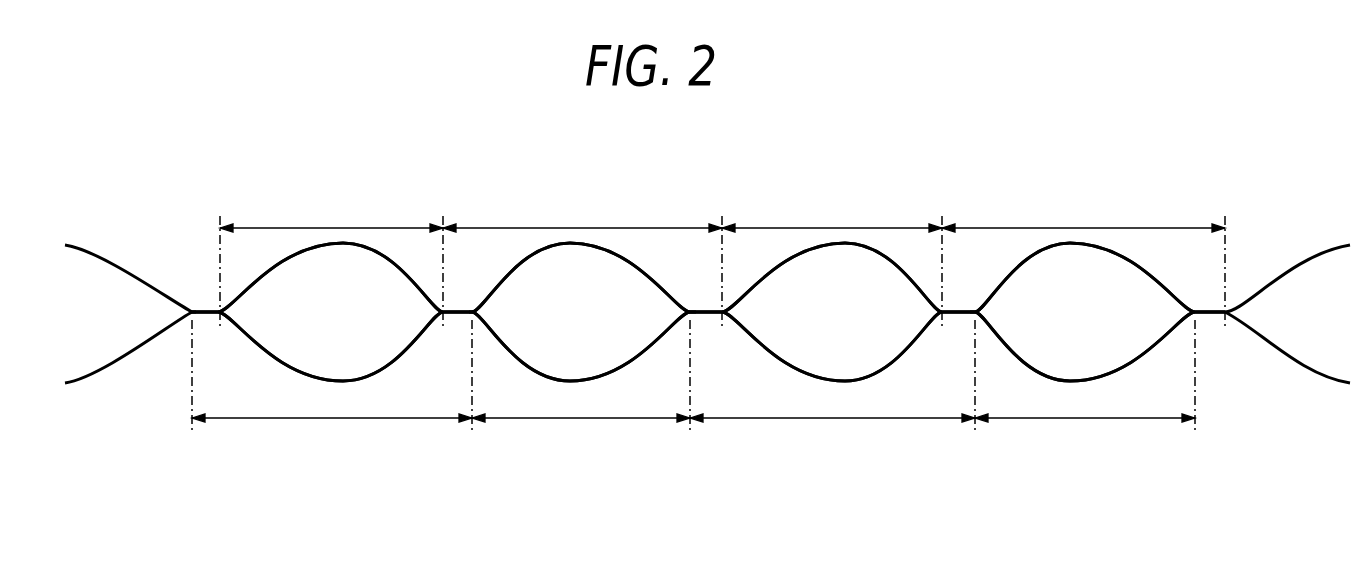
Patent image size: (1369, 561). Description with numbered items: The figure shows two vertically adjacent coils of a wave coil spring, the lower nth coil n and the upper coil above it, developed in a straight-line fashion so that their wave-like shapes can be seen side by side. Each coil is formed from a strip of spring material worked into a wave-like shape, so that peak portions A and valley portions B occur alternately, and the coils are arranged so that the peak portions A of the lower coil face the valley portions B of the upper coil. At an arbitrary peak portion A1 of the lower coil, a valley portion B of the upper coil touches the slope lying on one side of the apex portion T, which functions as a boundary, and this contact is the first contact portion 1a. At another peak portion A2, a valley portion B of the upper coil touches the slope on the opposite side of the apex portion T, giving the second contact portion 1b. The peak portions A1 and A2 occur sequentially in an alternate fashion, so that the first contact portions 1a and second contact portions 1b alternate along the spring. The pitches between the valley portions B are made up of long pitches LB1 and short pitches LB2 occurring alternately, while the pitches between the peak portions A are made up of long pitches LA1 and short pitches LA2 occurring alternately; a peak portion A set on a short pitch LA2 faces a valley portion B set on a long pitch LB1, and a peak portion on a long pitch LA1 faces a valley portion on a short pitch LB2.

The nth coil n is at (90, 380).
The apex portion T is at (192, 312).
The first contact portion 1a is at (448, 318).
The second contact portion 1b is at (210, 316).
The peak portion A is at (334, 286).
The valley portion B is at (239, 289).
The peak portion A1 is at (478, 364).
The peak portion A2 is at (146, 364).
The long pitch between peak portions LA1 is at (834, 262).
The short pitch between peak portions LA2 is at (581, 262).
The long pitch between valley portions LB1 is at (583, 436).
The short pitch between valley portions LB2 is at (833, 436).